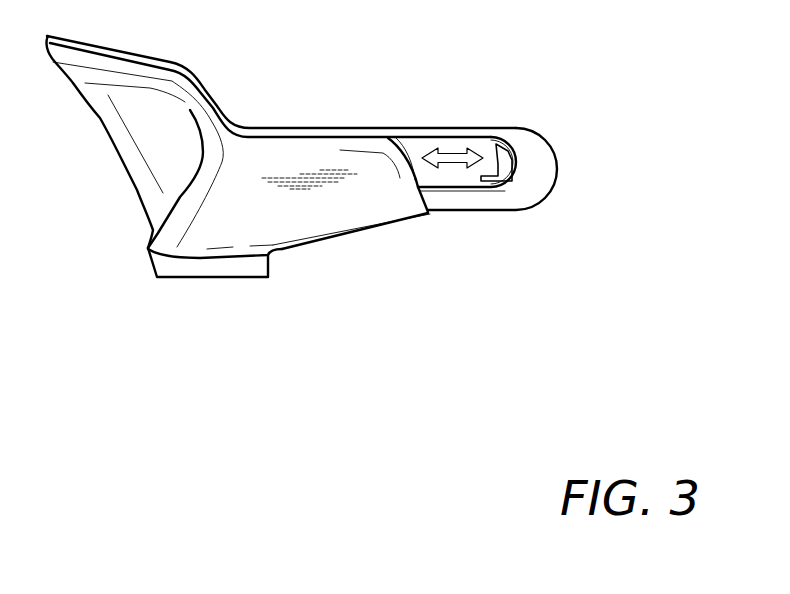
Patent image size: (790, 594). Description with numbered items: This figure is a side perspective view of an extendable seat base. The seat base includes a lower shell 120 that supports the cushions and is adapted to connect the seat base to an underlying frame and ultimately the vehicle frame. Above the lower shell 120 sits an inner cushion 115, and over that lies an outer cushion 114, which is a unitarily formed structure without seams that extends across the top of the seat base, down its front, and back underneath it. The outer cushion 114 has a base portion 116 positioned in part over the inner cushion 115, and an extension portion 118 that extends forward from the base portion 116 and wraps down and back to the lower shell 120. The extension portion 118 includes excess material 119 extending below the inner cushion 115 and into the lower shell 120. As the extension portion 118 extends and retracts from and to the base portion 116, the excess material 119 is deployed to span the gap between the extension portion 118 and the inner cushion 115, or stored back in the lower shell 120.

The outer cushion 114 is at (405, 138).
The inner cushion 115 is at (447, 163).
The base portion 116 is at (286, 137).
The extension portion 118 is at (535, 152).
The excess material 119 is at (453, 213).
The lower shell 120 is at (328, 212).